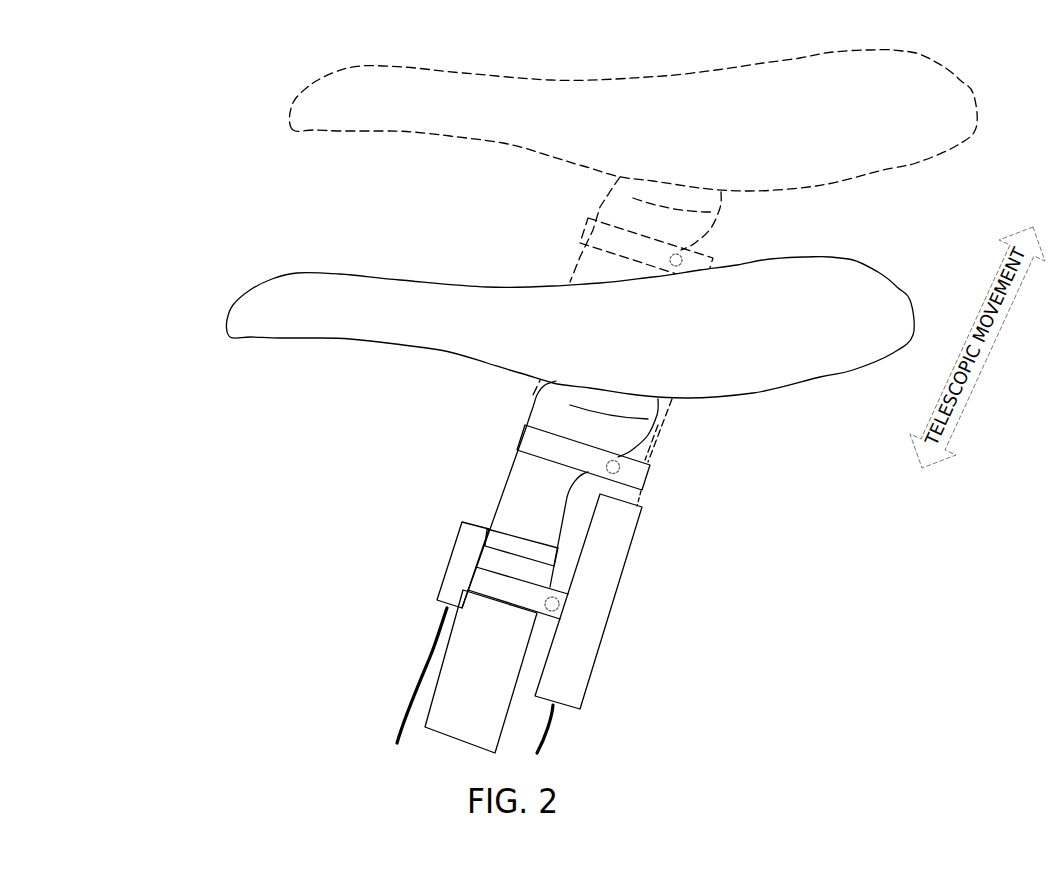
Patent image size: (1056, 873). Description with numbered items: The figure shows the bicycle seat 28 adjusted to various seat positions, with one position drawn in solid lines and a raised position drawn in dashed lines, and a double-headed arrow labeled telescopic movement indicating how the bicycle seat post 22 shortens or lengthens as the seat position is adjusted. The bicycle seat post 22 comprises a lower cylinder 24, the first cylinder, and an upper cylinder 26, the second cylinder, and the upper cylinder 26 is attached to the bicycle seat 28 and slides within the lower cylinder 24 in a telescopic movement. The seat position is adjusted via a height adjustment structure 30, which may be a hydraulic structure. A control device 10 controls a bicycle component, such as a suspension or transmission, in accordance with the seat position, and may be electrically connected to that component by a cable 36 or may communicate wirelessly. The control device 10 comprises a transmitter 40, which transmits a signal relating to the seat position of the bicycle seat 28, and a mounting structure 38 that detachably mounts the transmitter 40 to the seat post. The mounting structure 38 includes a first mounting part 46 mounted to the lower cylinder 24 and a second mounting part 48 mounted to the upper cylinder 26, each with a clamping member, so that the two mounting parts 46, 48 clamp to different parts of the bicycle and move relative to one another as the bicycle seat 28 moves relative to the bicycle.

The control device 10 is at (536, 506).
The bicycle seat post 22 is at (516, 567).
The lower cylinder 24 is at (500, 537).
The upper cylinder 26 is at (502, 490).
The bicycle seat 28 is at (236, 305).
The height adjustment structure 30 is at (447, 566).
The cable 36 is at (547, 735).
The mounting structure 38 is at (604, 567).
The transmitter 40 is at (593, 675).
The first mounting part 46 is at (572, 613).
The second mounting part 48 is at (655, 484).